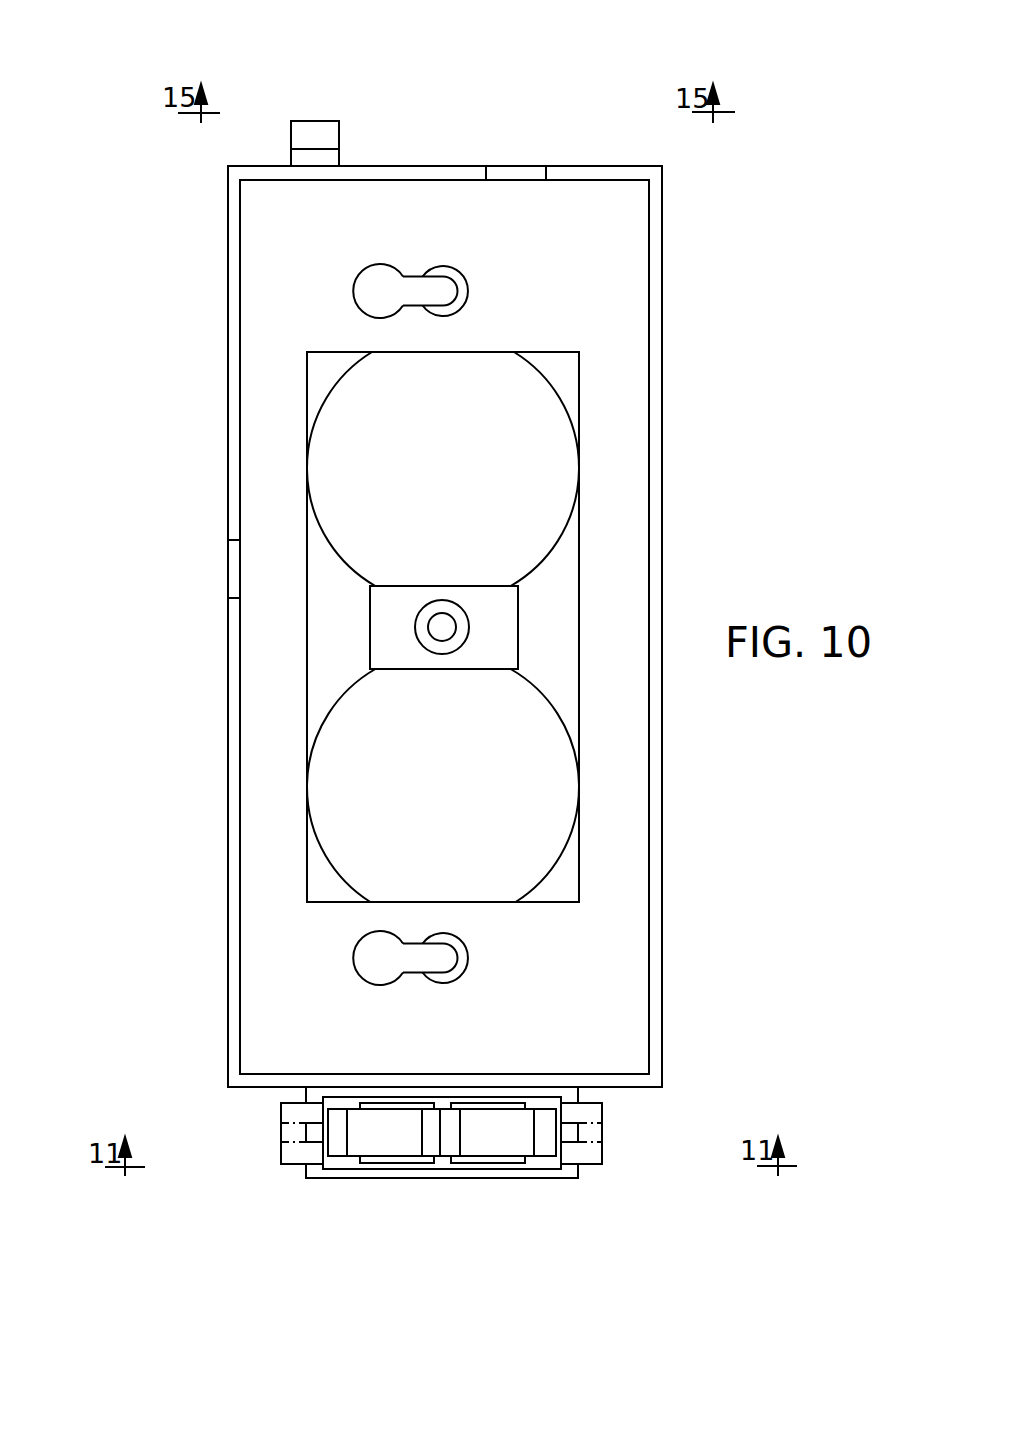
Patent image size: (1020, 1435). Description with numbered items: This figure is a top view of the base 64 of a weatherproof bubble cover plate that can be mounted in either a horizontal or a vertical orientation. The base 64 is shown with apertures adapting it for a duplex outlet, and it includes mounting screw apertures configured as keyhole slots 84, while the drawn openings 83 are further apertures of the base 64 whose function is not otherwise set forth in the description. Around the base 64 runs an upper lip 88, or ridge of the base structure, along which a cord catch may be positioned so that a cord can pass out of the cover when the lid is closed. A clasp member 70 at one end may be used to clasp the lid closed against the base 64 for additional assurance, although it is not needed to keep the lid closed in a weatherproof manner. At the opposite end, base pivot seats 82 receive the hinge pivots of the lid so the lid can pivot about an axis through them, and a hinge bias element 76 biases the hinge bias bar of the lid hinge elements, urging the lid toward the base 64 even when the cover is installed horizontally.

The base 64 is at (272, 923).
The clasp member 70 is at (313, 132).
The hinge bias element 76 is at (508, 1125).
The base pivot seats 82 is at (283, 1140).
The keyhole slots 83 is at (380, 288).
The keyhole slots 84 is at (513, 172).
The upper lip 88 is at (615, 172).